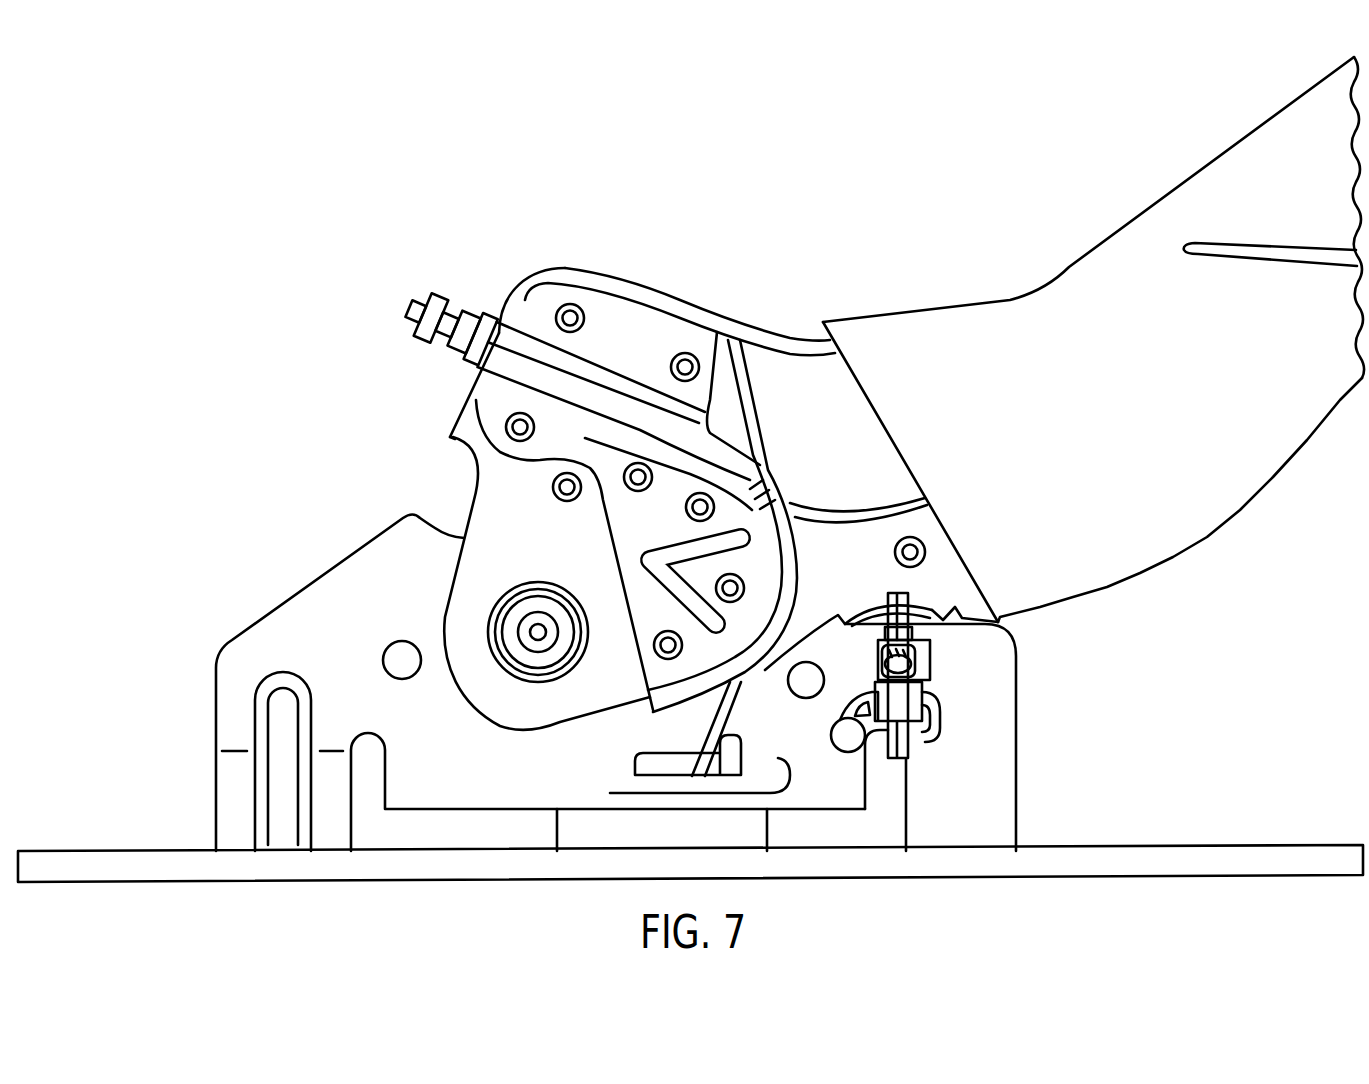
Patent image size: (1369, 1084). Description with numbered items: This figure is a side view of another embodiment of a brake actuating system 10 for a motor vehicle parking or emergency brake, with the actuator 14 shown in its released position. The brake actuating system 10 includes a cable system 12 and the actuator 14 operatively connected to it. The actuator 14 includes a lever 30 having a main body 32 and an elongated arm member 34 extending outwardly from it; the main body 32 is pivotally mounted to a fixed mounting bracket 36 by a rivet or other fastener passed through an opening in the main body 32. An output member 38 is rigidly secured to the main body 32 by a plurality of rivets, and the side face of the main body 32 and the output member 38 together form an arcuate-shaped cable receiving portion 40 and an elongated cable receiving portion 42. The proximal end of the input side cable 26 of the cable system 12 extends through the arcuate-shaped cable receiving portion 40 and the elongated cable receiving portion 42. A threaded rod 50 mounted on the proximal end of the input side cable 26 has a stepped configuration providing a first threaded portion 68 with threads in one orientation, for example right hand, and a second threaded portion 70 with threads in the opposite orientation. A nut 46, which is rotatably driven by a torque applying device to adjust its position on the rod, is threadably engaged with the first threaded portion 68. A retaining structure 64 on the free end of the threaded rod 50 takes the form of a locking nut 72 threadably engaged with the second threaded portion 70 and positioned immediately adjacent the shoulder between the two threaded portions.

The brake actuating system 10 is at (298, 313).
The cable system 12 is at (616, 683).
The actuator 14 is at (721, 467).
The input side cable 26 is at (719, 723).
The lever 30 is at (812, 340).
The main body 32 is at (663, 303).
The elongated arm member 34 is at (1053, 323).
The fixed mounting bracket 36 is at (285, 700).
The output member 38 is at (550, 293).
The arcuate-shaped cable receiving portion 40 is at (781, 502).
The elongated cable receiving portion 42 is at (587, 397).
The nut 46 is at (488, 313).
The threaded rod 50 is at (466, 298).
The retaining structure 64 is at (427, 296).
The first threaded portion 68 is at (452, 333).
The second threaded portion 70 is at (418, 306).
The locking nut 72 is at (423, 338).